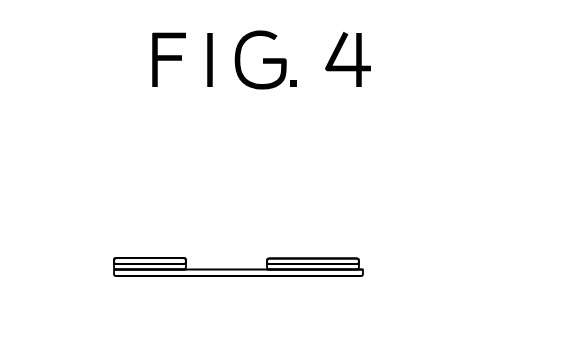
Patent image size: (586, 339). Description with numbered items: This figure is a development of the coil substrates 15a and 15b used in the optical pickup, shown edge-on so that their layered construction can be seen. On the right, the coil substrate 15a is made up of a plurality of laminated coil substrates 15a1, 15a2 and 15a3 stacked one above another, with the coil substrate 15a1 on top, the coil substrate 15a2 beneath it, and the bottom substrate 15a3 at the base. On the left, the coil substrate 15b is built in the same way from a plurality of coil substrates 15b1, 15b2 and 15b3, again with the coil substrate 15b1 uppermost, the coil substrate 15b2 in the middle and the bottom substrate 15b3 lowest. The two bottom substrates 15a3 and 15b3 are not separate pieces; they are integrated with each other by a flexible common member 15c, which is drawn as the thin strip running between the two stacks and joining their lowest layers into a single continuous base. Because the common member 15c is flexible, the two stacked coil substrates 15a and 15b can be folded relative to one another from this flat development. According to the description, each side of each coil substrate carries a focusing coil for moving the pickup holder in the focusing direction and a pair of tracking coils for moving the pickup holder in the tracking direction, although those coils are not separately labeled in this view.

The coil substrate 15a is at (302, 257).
The coil substrate 15a1 is at (358, 259).
The coil substrate 15a2 is at (359, 267).
The bottom substrate 15a3 is at (359, 277).
The coil substrate 15b is at (153, 246).
The coil substrate 15b1 is at (123, 257).
The coil substrate 15b2 is at (114, 266).
The bottom substrate 15b3 is at (125, 276).
The flexible common member 15c is at (229, 269).